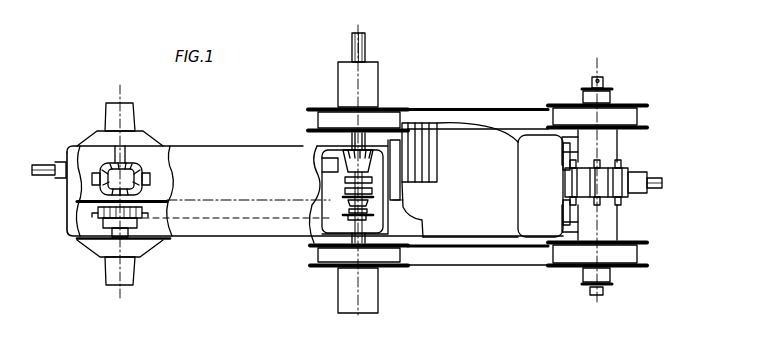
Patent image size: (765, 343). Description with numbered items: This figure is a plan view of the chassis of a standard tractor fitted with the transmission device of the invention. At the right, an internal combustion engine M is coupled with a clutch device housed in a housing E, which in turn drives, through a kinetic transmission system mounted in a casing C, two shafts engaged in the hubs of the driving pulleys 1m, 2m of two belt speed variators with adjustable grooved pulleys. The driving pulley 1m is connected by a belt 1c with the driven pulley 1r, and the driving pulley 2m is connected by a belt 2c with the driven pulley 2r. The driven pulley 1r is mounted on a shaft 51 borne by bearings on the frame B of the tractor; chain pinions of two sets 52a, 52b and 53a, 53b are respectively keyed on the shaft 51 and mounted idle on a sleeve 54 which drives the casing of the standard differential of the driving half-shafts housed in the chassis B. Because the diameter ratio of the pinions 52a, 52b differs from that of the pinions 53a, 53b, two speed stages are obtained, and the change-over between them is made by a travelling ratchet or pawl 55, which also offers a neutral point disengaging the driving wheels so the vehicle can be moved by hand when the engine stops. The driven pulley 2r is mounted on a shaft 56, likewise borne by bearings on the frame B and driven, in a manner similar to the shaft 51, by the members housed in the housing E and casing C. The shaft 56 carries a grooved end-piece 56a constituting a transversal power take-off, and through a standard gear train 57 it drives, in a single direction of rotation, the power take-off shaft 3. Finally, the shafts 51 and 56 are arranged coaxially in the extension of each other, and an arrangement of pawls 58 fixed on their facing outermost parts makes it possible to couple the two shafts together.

The belt 1c is at (493, 266).
The driving pulley 1m is at (630, 270).
The driven pulley 1r is at (398, 272).
The belt 2c is at (498, 115).
The driving pulley 2m is at (625, 102).
The driven pulley 2r is at (333, 102).
The power take-off shaft 3 is at (52, 178).
The shaft 51 is at (352, 241).
The chain pinion 52a is at (345, 199).
The chain pinion 52b is at (166, 197).
The chain pinion 53a is at (348, 217).
The chain pinion 53b is at (137, 222).
The sleeve 54 is at (110, 231).
The travelling ratchet or pawl 55 is at (97, 213).
The shaft 56 is at (362, 140).
The grooved end-piece 56a is at (362, 48).
The gear train 57 is at (345, 153).
The pawls 58 is at (372, 186).
The chassis B is at (315, 192).
The casing C is at (626, 164).
The housing E is at (544, 186).
The internal combustion engine M is at (455, 180).